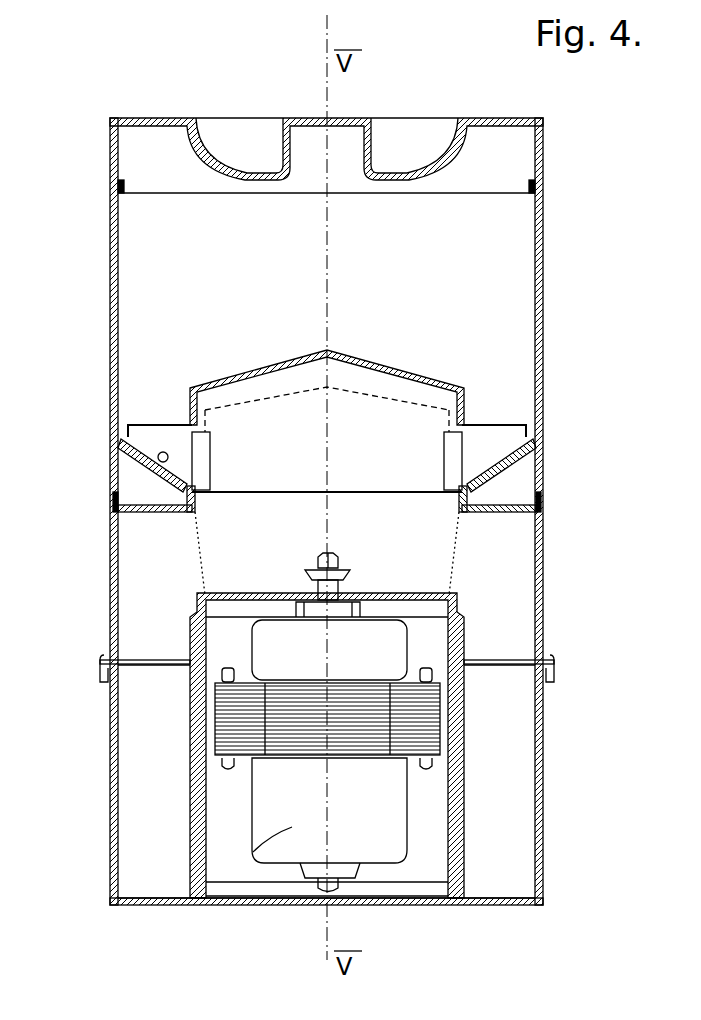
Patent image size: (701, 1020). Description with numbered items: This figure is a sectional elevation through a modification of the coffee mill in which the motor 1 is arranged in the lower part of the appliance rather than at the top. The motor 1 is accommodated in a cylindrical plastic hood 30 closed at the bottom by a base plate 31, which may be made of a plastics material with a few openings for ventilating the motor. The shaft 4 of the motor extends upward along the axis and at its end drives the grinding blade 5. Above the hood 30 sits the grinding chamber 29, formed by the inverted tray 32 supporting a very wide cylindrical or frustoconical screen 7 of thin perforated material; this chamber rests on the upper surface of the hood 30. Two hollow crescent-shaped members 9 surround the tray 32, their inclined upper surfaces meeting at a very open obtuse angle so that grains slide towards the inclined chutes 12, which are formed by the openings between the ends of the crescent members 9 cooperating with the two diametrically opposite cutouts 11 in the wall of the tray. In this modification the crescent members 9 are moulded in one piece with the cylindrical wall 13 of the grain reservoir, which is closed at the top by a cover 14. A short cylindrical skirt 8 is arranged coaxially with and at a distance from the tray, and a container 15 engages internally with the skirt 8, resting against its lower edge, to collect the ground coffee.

The motor 1 is at (327, 756).
The shaft 4 is at (332, 600).
The grinding blade 5 is at (346, 580).
The grinding bowl 7 is at (196, 560).
The skirt 8 is at (105, 606).
The crescent-shaped members 9 is at (138, 422).
The cutouts 11 is at (203, 456).
The inclined chutes 12 is at (163, 462).
The cylinder 13 is at (110, 270).
The cover 14 is at (142, 118).
The container 15 is at (508, 905).
The grinding chamber 29 is at (430, 400).
The hood 30 is at (440, 598).
The base plate 31 is at (315, 905).
The inverted tray 32 is at (292, 358).